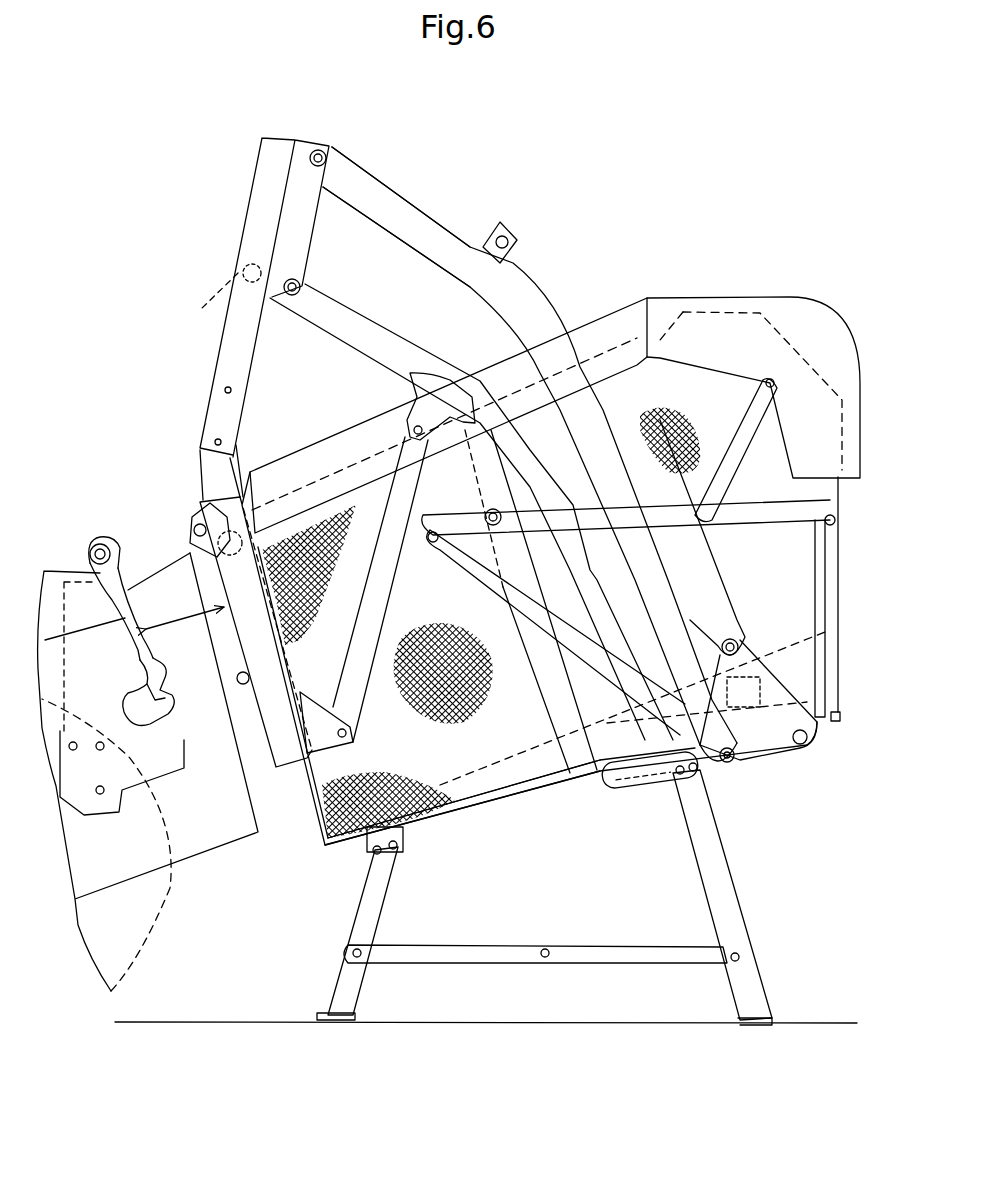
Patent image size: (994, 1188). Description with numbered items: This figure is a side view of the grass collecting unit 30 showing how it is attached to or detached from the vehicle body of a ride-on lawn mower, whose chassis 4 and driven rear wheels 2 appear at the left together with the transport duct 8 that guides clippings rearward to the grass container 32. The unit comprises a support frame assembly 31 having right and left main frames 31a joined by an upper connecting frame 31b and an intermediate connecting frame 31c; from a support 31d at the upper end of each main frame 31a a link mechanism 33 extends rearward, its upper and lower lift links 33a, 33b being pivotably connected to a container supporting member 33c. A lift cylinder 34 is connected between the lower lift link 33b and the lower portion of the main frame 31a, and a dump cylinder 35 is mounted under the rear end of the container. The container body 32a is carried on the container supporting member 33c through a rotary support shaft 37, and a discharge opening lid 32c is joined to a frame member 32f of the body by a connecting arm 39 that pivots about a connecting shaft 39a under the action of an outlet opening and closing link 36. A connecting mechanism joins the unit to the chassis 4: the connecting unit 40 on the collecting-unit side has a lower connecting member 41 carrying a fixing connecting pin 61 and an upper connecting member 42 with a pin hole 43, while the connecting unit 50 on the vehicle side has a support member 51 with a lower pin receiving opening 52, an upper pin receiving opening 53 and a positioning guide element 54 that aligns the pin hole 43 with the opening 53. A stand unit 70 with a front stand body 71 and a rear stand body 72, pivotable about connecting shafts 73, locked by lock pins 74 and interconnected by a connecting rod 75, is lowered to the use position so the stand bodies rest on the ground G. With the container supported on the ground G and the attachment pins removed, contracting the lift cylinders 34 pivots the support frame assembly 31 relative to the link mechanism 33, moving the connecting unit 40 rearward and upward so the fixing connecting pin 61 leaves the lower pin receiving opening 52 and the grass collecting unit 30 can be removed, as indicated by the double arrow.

The rear wheels 2 is at (146, 950).
The chassis 4 is at (100, 743).
The transport duct 8 is at (228, 841).
The grass collecting unit 30 is at (688, 207).
The support frame assembly 31 is at (247, 184).
The main frames 31a is at (243, 258).
The upper connecting frame 31b is at (208, 308).
The intermediate connecting frame 31c is at (245, 495).
The support 31d is at (308, 250).
The grass container 32 is at (583, 325).
The container body 32a is at (505, 795).
The discharge opening lid 32c is at (800, 330).
The frame member 32f is at (530, 647).
The link mechanism 33 is at (443, 222).
The upper lift link 33a is at (407, 213).
The lower lift link 33b is at (333, 323).
The container supporting member 33c is at (768, 685).
The lift cylinder 34 is at (367, 605).
The dump cylinder 35 is at (750, 740).
The outlet opening and closing link 36 is at (448, 563).
The rotary support shaft 37 is at (805, 745).
The connecting arm 39 is at (760, 517).
The connecting shaft 39a is at (507, 530).
The connecting unit at the grass collecting unit side 40 is at (190, 517).
The lower connecting member 41 is at (258, 677).
The upper connecting member 42 is at (193, 520).
The pin hole 43 is at (193, 530).
The connecting unit at the vehicle body side 50 is at (166, 672).
The support member 51 is at (109, 801).
The lower pin receiving opening 52 is at (151, 699).
The upper pin receiving opening 53 is at (91, 553).
The positioning guide element 54 is at (127, 577).
The fixing connecting pin 61 is at (236, 678).
The stand unit 70 is at (546, 887).
The front stand body 71 is at (347, 987).
The rear stand body 72 is at (715, 857).
The connecting shaft 73 is at (672, 775).
The lock pin 74 is at (697, 777).
The connecting rod 75 is at (630, 947).
The ground G is at (810, 1022).